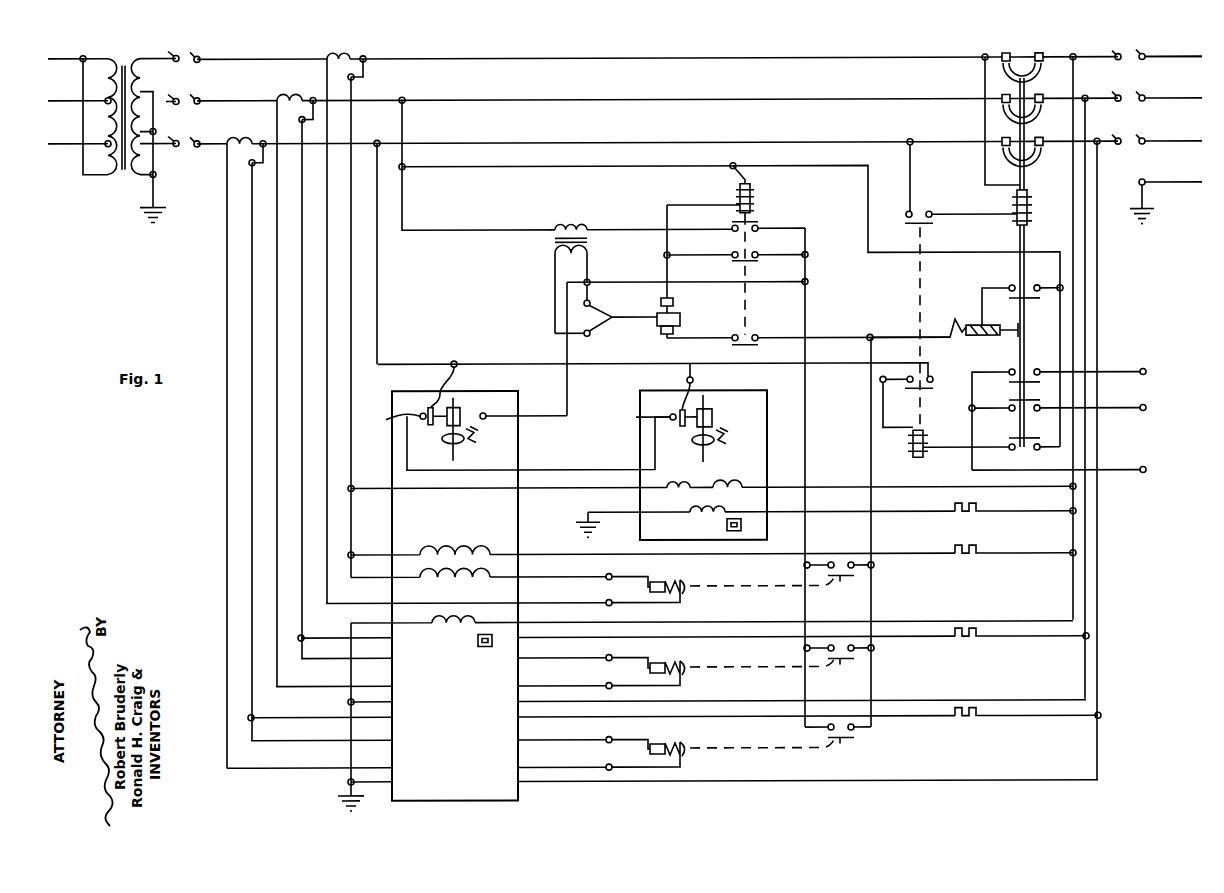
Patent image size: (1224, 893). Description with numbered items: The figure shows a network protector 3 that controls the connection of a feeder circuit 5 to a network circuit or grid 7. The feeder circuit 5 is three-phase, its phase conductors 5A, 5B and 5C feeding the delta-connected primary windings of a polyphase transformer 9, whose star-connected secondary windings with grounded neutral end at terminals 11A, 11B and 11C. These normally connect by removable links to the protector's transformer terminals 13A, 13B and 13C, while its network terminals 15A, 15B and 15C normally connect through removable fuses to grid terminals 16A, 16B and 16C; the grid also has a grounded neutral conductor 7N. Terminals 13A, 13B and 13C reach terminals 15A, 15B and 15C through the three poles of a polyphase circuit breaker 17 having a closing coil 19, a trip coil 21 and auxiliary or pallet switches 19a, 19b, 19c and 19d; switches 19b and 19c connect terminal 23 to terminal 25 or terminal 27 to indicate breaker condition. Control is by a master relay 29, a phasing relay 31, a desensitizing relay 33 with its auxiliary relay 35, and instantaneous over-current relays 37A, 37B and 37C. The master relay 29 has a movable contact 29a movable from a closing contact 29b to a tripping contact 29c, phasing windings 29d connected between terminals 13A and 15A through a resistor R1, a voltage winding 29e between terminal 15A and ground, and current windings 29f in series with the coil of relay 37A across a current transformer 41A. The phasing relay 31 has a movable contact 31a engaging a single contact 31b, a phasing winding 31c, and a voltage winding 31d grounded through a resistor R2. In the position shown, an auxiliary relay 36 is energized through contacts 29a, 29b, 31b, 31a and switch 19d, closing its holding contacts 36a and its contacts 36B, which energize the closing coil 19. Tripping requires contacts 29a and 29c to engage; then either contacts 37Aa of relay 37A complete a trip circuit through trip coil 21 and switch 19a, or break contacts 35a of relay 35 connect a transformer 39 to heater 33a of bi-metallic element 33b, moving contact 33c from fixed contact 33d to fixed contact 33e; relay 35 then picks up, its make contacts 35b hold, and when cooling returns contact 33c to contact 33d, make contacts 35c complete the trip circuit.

The network protector 3 is at (466, 310).
The feeder circuit 5 is at (70, 168).
The phase conductor 5A is at (78, 52).
The phase conductor 5B is at (79, 94).
The phase conductor 5C is at (79, 137).
The network circuit or grid 7 is at (1181, 81).
The neutral conductor 7N is at (1182, 185).
The polyphase transformer 9 is at (124, 180).
The terminal 11A is at (159, 51).
The terminal 11B is at (173, 93).
The terminal 11C is at (164, 136).
The transformer terminal 13A is at (654, 321).
The transformer terminal 13B is at (654, 384).
The transformer terminal 13C is at (654, 446).
The network terminal 15A is at (1099, 48).
The network terminal 15B is at (1099, 89).
The network terminal 15C is at (1101, 132).
The terminal 16A is at (1169, 47).
The terminal 16B is at (1169, 88).
The terminal 16C is at (1169, 131).
The polyphase circuit breaker 17 is at (984, 245).
The closing coil 19 is at (1029, 199).
The auxiliary switch 19a is at (1010, 288).
The auxiliary switch 19b is at (1008, 385).
The auxiliary switch 19c is at (1010, 407).
The auxiliary switch 19d is at (1010, 441).
The trip coil 21 is at (966, 326).
The terminal 23 is at (1152, 468).
The terminal 25 is at (1146, 374).
The terminal 27 is at (1152, 406).
The master relay 29 is at (511, 583).
The movable contact 29a is at (437, 414).
The closing contact 29b is at (511, 441).
The tripping contact 29c is at (481, 415).
The phasing windings 29d is at (450, 554).
The voltage winding 29e is at (455, 631).
The current windings 29f is at (450, 581).
The phasing relay 31 is at (687, 451).
The movable contact 31a is at (687, 386).
The single contact 31b is at (652, 417).
The phasing winding 31c is at (702, 489).
The voltage winding 31d is at (711, 522).
The desensitizing relay 33 is at (642, 276).
The heater 33a is at (598, 314).
The bi-metallic element 33b is at (626, 327).
The movable contact 33c is at (681, 319).
The fixed contact 33d is at (675, 333).
The fixed contact 33e is at (674, 302).
The auxiliary relay 35 is at (784, 196).
The break contacts 35a is at (758, 226).
The make contacts 35b is at (758, 266).
The make contacts 35c is at (757, 337).
The auxiliary relay 36 is at (906, 468).
The contacts 36a is at (930, 393).
The contacts 36B is at (916, 214).
The instantaneous over-current relay 37A is at (717, 581).
The instantaneous over-current relay 37B is at (717, 663).
The instantaneous over-current relay 37C is at (717, 745).
The contacts 37Aa is at (841, 560).
The transformer 39 is at (555, 240).
The current transformer 41A is at (329, 57).
The resistor R1 is at (985, 551).
The resistor R2 is at (985, 508).